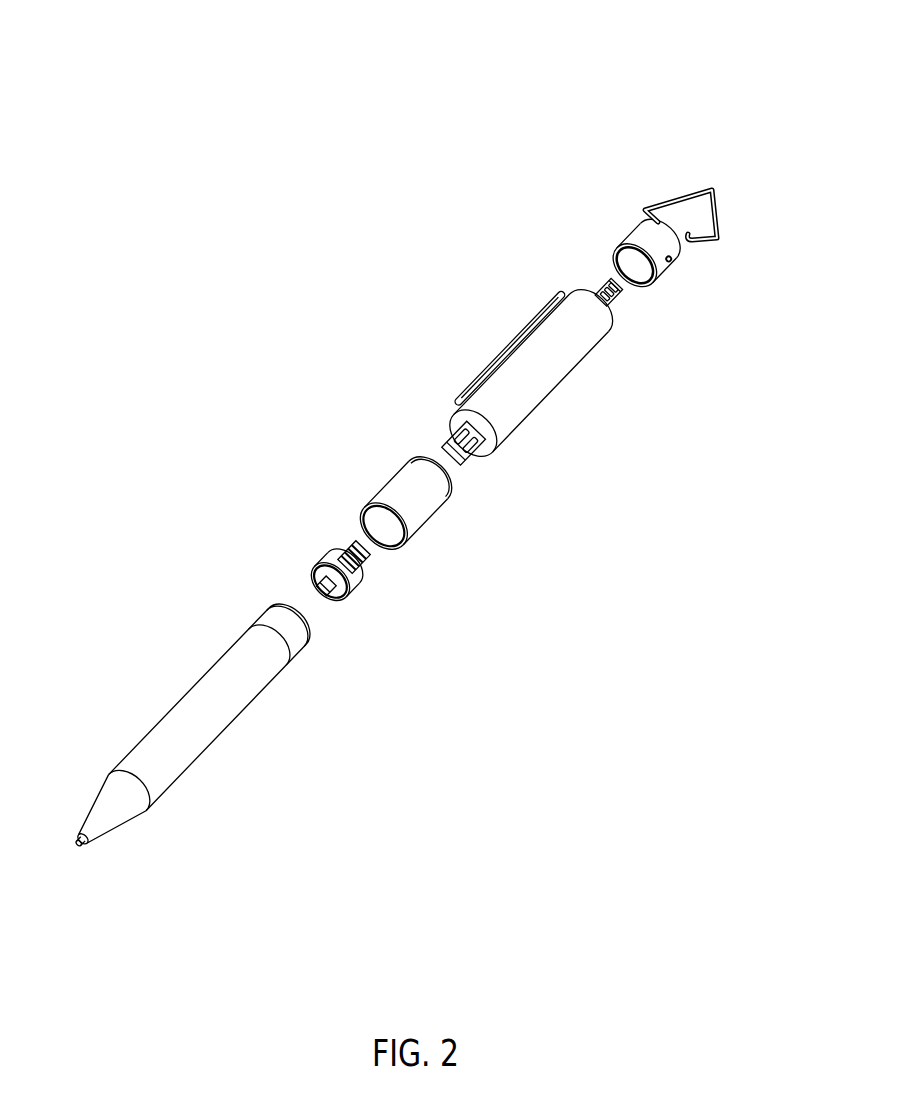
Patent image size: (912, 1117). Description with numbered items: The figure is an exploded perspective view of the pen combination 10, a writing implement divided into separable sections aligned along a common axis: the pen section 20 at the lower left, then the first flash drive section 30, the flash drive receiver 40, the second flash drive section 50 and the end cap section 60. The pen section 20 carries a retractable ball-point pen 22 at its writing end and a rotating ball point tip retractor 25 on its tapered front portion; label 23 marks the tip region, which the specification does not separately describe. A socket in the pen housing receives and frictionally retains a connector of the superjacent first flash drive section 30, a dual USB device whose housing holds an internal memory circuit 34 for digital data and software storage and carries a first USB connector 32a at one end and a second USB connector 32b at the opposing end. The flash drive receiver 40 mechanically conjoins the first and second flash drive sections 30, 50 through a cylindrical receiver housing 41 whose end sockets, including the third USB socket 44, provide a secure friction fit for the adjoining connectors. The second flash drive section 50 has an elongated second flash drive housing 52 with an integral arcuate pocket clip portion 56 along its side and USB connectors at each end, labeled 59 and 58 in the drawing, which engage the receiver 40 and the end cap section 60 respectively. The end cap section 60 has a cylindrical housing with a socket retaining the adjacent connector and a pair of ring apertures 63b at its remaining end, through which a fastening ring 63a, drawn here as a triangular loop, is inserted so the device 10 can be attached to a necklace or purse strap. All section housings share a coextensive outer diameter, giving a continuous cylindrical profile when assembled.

The pen combination 10 is at (133, 155).
The pen section 20 is at (194, 748).
The retractable ball-point pen 22 is at (74, 851).
The tip end cone 23 is at (90, 847).
The rotating ball point tip retractor 25 is at (103, 800).
The first flash drive section 30 is at (344, 582).
The first USB connector 32a is at (342, 542).
The second USB connector 32b is at (313, 575).
The memory circuit 34 is at (357, 598).
The flash drive receiver 40 is at (418, 515).
The receiver housing 41 is at (410, 540).
The third USB socket 44 is at (366, 528).
The second flash drive section 50 is at (532, 333).
The second flash drive housing 52 is at (593, 353).
The pocket clip portion 56 is at (540, 310).
The micro USB plug 58 is at (602, 277).
The USB plug 59 is at (445, 442).
The end cap section 60 is at (706, 231).
The fastening ring 63a is at (720, 198).
The ring apertures 63b is at (680, 257).